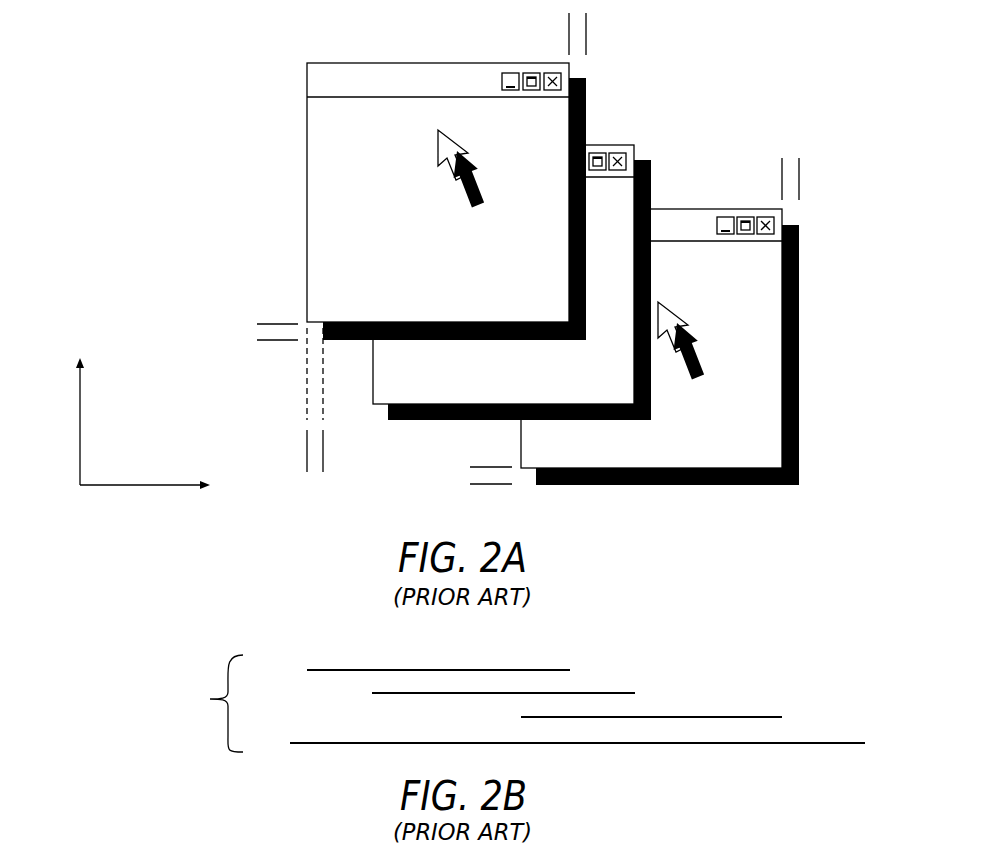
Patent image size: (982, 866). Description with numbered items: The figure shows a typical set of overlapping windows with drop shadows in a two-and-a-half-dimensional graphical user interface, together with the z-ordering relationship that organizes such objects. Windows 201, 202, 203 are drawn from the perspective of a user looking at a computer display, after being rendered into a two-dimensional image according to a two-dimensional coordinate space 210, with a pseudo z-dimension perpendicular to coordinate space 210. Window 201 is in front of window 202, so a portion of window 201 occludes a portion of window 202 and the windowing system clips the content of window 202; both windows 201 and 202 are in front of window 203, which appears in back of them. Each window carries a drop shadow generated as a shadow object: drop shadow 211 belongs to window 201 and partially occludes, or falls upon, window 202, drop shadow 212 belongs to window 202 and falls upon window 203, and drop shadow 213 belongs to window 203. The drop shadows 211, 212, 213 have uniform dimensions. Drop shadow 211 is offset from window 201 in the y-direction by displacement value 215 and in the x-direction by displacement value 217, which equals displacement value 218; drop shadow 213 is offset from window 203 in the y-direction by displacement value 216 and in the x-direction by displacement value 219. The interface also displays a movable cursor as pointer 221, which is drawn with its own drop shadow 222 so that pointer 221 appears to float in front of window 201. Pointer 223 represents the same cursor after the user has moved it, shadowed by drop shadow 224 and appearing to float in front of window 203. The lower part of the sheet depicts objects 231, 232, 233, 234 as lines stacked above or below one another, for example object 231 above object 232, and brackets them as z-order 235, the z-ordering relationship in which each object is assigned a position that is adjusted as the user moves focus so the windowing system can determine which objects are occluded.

In FIG. 2A, the window 201 is at (455, 308).
In FIG. 2A, the window 202 is at (520, 388).
In FIG. 2A, the window 203 is at (667, 455).
In FIG. 2A, the two-dimensional coordinate space 210 is at (80, 452).
In FIG. 2A, the drop shadow 211 is at (586, 109).
In FIG. 2A, the drop shadow 212 is at (651, 182).
In FIG. 2A, the drop shadow 213 is at (799, 338).
In FIG. 2A, the displacement value 215 is at (277, 305).
In FIG. 2A, the displacement value 216 is at (489, 450).
In FIG. 2A, the displacement value 217 is at (340, 448).
In FIG. 2A, the displacement value 218 is at (605, 30).
In FIG. 2A, the displacement value 219 is at (762, 176).
In FIG. 2A, the pointer 221 is at (449, 134).
In FIG. 2A, the drop shadow 222 is at (483, 191).
In FIG. 2A, the pointer 223 is at (669, 307).
In FIG. 2A, the drop shadow 224 is at (704, 365).
In FIG. 2B, the object 231 is at (570, 670).
In FIG. 2B, the object 232 is at (635, 693).
In FIG. 2B, the object 233 is at (782, 717).
In FIG. 2B, the object 234 is at (815, 743).
In FIG. 2B, the z-order 235 is at (201, 703).